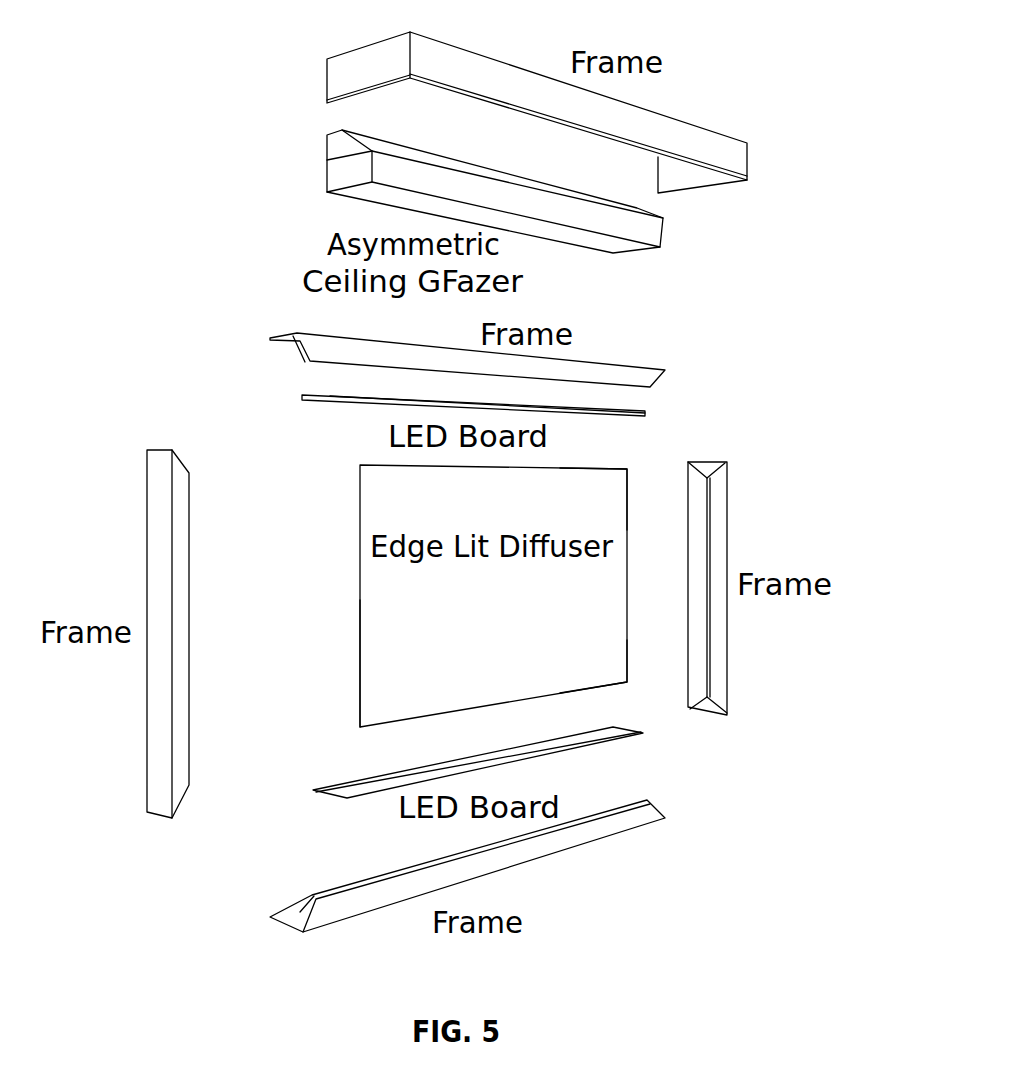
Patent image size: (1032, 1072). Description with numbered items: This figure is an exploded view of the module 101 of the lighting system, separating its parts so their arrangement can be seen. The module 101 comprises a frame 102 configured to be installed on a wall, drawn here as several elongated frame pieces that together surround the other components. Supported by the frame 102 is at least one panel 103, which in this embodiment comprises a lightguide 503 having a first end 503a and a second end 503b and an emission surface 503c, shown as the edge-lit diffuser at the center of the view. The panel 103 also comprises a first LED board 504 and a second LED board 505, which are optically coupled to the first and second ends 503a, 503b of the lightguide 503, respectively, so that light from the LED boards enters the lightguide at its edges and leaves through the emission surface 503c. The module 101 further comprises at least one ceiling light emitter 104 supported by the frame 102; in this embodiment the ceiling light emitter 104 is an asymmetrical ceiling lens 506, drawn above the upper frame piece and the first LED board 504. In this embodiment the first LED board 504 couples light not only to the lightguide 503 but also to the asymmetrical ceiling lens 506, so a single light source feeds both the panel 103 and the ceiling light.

The module 101 is at (807, 98).
The frame 102 is at (325, 82).
The panel 103 is at (210, 353).
The ceiling light emitter 104 is at (414, 178).
The asymmetrical ceiling lens 506 is at (325, 148).
The lightguide 503 is at (373, 583).
The first end 503a is at (610, 488).
The second end 503b is at (612, 668).
The emission surface 503c is at (397, 650).
The first LED board 504 is at (350, 397).
The second LED board 505 is at (330, 797).